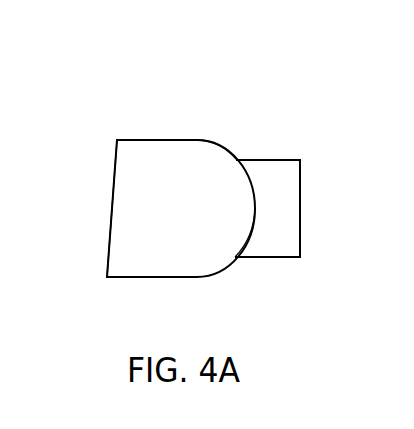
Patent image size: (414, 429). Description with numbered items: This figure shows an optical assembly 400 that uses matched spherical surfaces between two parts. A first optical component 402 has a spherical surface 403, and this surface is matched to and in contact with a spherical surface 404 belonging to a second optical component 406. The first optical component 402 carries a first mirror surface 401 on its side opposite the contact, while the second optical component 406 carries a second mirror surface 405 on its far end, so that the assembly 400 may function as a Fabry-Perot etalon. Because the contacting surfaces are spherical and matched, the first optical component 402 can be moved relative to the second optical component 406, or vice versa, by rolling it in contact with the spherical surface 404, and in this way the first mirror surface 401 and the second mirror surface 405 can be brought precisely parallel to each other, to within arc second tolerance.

The optical assembly 400 is at (104, 88).
The first mirror surface 401 is at (107, 248).
The first optical component 402 is at (190, 220).
The spherical surface 403 is at (230, 153).
The spherical surface 404 is at (246, 247).
The second mirror surface 405 is at (303, 247).
The second optical component 406 is at (293, 218).